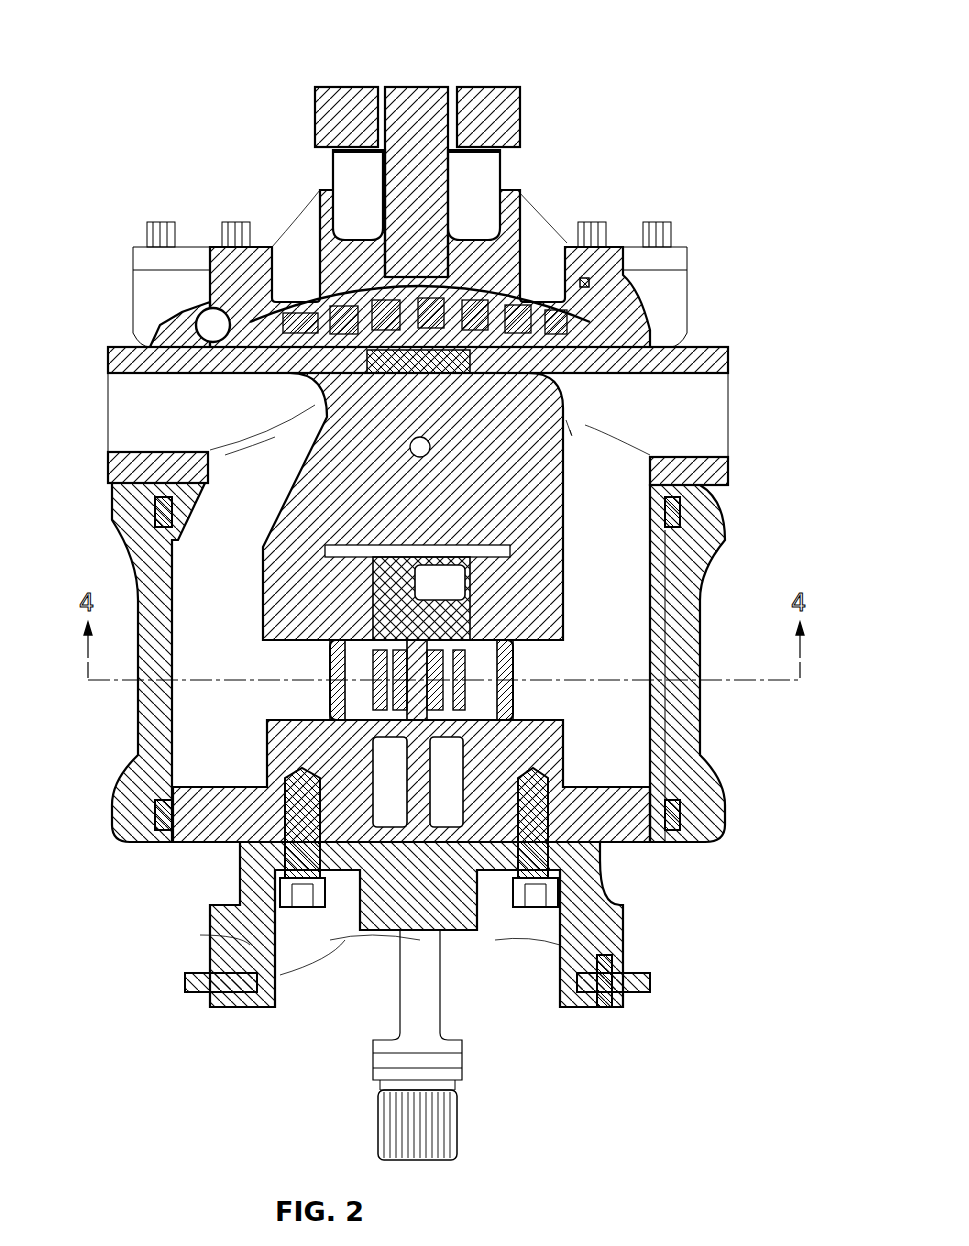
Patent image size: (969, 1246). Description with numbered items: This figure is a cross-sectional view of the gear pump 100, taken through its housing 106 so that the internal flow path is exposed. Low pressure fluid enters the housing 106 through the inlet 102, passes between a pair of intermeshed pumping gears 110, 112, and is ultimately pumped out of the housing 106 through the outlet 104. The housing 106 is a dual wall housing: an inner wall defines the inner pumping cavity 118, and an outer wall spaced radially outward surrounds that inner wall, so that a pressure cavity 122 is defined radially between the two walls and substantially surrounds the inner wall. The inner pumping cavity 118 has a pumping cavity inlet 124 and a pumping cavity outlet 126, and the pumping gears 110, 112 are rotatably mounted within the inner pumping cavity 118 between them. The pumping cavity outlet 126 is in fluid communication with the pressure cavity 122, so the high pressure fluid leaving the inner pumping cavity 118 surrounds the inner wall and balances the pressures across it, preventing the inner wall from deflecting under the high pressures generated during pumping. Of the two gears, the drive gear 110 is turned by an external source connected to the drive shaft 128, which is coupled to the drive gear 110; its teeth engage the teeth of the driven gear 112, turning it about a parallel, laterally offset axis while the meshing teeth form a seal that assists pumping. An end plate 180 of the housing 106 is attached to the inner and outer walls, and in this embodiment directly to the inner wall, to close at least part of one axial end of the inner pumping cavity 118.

The gear pump 100 is at (142, 51).
The inlet 102 is at (724, 394).
The outlet 104 is at (125, 393).
The housing 106 is at (683, 263).
The drive gear 110 is at (527, 700).
The driven gear 112 is at (612, 710).
The inner pumping cavity 118 is at (390, 803).
The pressure cavity 122 is at (197, 703).
The pumping cavity inlet 124 is at (520, 658).
The pumping cavity outlet 126 is at (291, 705).
The drive shaft 128 is at (457, 1118).
The end plate 180 is at (212, 942).